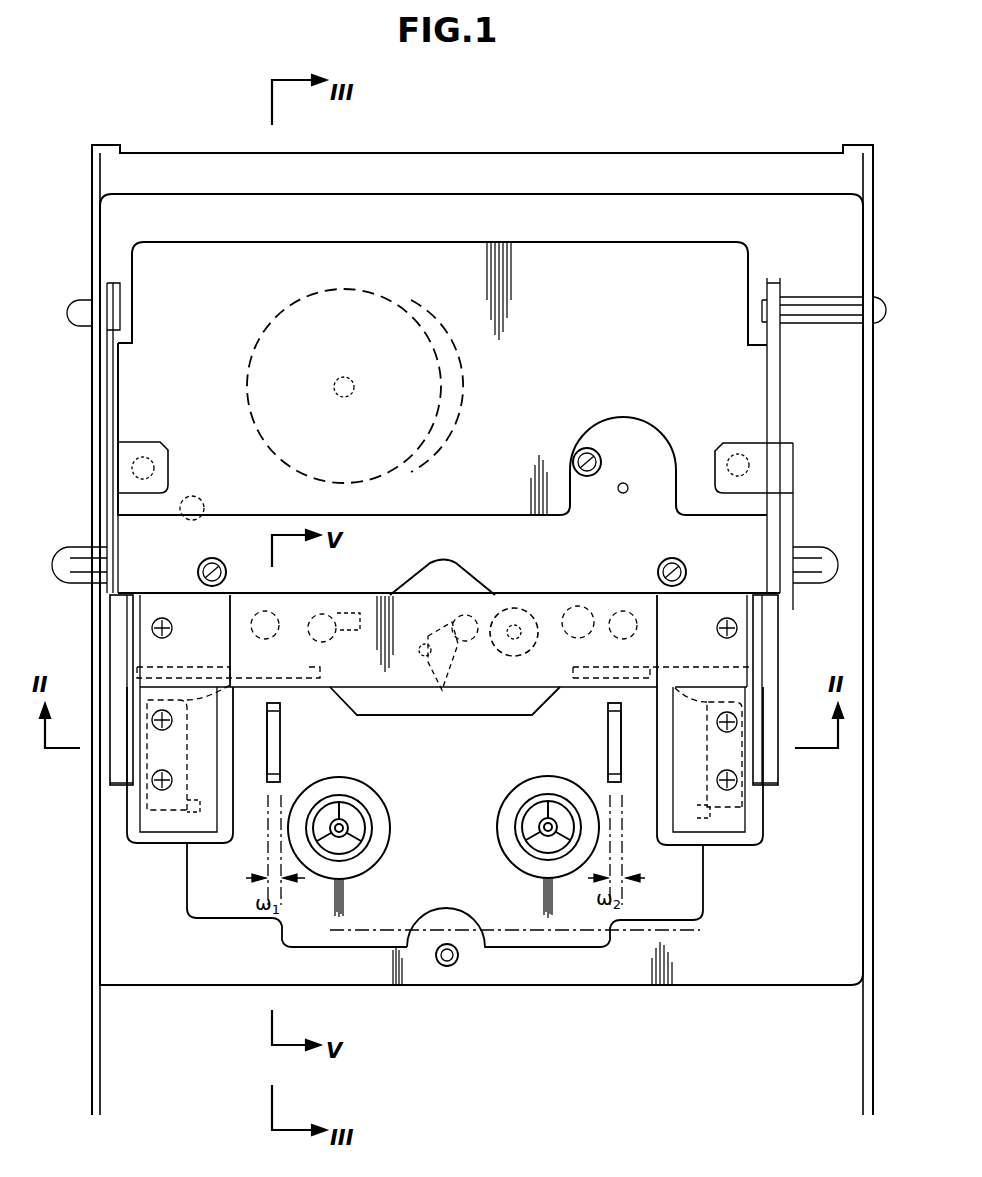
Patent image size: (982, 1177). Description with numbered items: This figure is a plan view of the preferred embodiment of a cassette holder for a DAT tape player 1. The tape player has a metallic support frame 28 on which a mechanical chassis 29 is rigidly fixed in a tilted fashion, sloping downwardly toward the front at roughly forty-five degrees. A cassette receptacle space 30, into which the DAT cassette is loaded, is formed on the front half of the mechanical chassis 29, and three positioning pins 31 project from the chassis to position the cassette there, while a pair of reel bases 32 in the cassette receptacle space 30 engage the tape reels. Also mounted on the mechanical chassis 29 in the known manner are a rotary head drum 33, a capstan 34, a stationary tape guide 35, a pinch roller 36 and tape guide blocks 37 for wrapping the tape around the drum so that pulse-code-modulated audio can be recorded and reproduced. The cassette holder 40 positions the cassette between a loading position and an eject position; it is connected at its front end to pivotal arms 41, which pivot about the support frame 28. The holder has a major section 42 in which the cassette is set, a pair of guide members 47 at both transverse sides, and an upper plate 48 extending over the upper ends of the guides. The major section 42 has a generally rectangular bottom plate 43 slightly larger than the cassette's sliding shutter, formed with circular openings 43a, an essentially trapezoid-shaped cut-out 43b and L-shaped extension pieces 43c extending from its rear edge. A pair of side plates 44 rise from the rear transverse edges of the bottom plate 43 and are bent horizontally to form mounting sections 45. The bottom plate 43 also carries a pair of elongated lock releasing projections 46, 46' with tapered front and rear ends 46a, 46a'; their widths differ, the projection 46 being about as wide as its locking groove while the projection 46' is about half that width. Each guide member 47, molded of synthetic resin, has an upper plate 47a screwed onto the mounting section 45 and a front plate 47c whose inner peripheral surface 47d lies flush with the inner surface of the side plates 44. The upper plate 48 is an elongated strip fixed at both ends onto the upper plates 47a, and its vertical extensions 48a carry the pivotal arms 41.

The paper feeding apparatus 1 is at (768, 118).
The support frame 28 is at (92, 262).
The mechanical chassis 29 is at (637, 242).
The cassette receptacle space 30 is at (715, 922).
The positioning pins 31 is at (270, 611).
The reel bases 32 is at (372, 822).
The rotary head drum 33 is at (264, 330).
The capstan 34 is at (624, 494).
The stationary tape guide 35 is at (196, 496).
The pinch roller 36 is at (515, 606).
The tape guide blocks 37 is at (318, 614).
The cassette holder 40 is at (776, 812).
The pivotal arms 41 is at (112, 592).
The major section 42 is at (187, 918).
The bottom plate 43 is at (332, 932).
The circular openings 43a is at (372, 860).
The trapezoid-shaped cut-out 43b is at (462, 712).
The L-shaped extension pieces 43c is at (230, 668).
The side plates 44 is at (187, 790).
The mounting sections 45 is at (180, 826).
The lock releasing projection 46 is at (308, 742).
The lock releasing projection 46' is at (553, 742).
The tapered front end 46a is at (302, 739).
The tapered rear end 46a' is at (573, 739).
The guide members 47 is at (127, 832).
The upper plate 47a is at (118, 792).
The front plate 47c is at (190, 843).
The inner peripheral surfaces 47d is at (187, 820).
The upper plate 48 is at (384, 594).
The vertical extensions 48a is at (130, 683).